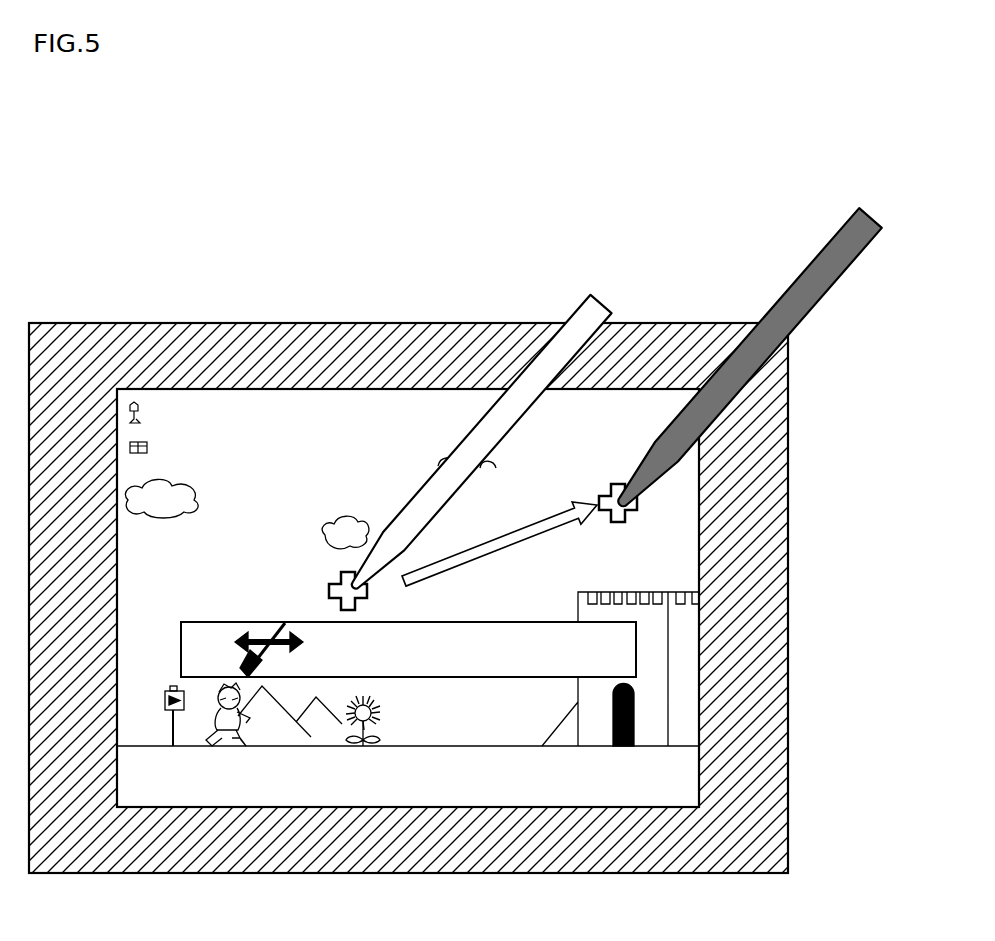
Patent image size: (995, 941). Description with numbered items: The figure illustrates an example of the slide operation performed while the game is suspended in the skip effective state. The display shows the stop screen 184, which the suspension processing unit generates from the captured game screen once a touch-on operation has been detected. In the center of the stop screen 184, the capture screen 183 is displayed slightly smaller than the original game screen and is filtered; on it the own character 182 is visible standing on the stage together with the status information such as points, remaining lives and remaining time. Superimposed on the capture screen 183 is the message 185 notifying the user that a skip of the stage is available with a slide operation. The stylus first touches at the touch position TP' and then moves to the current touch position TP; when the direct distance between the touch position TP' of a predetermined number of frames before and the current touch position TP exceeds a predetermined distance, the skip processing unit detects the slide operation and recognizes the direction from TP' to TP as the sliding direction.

The own character 182 is at (250, 718).
The capture screen 183 is at (492, 599).
The stop screen 184 is at (700, 323).
The message 185 is at (457, 677).
The current touch position TP is at (733, 532).
The touch position of the predetermined number of frames before TP' is at (303, 438).